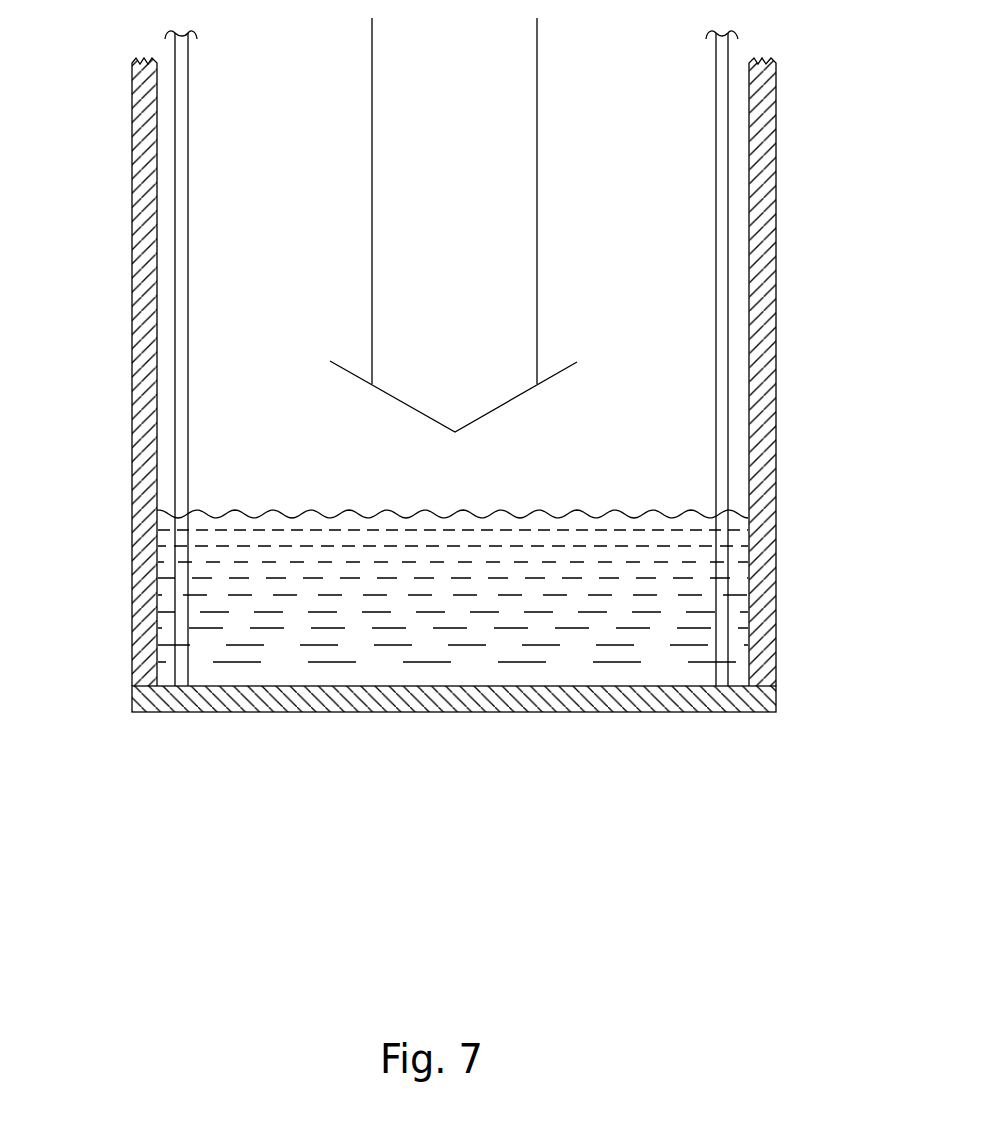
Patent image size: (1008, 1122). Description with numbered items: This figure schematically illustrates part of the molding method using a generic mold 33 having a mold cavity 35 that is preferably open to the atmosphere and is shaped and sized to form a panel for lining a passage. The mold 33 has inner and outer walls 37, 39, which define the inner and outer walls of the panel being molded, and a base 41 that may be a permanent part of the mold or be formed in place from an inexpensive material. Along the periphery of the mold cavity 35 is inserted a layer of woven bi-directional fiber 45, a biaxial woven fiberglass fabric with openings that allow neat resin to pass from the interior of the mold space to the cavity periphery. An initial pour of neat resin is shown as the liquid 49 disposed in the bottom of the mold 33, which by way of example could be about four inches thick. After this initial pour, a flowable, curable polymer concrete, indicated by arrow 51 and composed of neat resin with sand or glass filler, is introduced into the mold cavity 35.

The mold 33 is at (797, 154).
The mold cavity 35 is at (262, 156).
The inner wall 37 is at (777, 276).
The outer wall 39 is at (130, 287).
The base 41 is at (622, 712).
The woven bi-directional fiber layer 45 is at (190, 276).
The liquid 49 is at (621, 512).
The arrow 51 is at (537, 94).